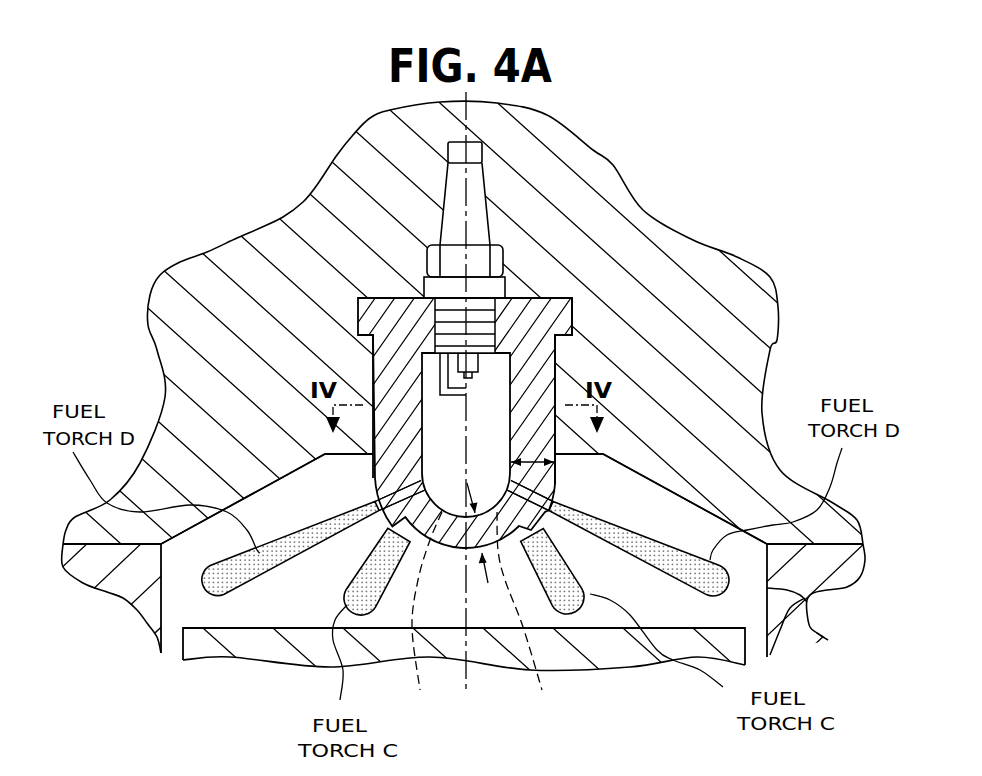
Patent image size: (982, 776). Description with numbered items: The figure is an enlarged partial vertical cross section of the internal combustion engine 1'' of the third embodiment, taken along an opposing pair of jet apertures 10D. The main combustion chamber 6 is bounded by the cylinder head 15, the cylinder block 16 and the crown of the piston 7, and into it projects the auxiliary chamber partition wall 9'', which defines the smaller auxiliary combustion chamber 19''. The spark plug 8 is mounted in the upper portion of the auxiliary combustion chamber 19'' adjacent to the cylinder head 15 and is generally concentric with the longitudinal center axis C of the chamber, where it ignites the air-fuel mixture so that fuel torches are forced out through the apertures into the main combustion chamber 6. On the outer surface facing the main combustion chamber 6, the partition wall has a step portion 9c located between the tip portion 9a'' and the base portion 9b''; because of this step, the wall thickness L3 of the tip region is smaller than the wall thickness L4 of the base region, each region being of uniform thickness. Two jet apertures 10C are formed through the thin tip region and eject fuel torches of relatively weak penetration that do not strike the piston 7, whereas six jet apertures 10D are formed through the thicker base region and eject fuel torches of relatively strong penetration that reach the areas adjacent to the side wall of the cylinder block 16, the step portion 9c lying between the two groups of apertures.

The spark plug 8 is at (488, 190).
The internal combustion engine 1'' is at (559, 328).
The auxiliary combustion chamber 19'' is at (592, 388).
The cylinder head 15 is at (710, 395).
The cylinder block 16 is at (462, 603).
The base portion 9b'' is at (243, 473).
The auxiliary chamber partition wall 9'' is at (527, 539).
The tip portion 9a'' is at (402, 575).
The step portion 9c is at (540, 528).
The jet apertures 10D is at (373, 497).
The jet apertures 10C is at (493, 617).
The main combustion chamber 6 is at (272, 613).
The piston 7 is at (253, 642).
The longitudinal center axis C is at (478, 403).
The wall thickness L3 is at (488, 548).
The wall thickness L4 is at (516, 463).